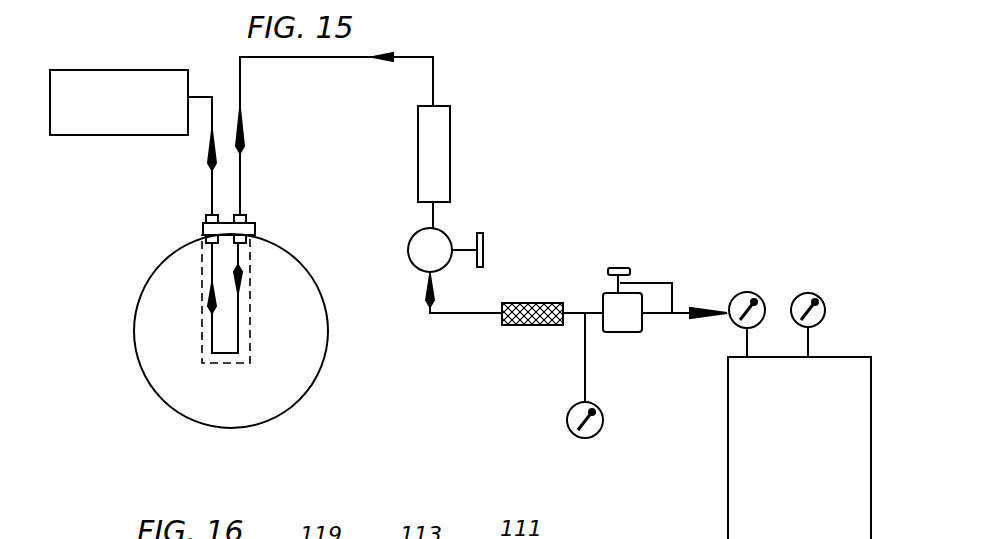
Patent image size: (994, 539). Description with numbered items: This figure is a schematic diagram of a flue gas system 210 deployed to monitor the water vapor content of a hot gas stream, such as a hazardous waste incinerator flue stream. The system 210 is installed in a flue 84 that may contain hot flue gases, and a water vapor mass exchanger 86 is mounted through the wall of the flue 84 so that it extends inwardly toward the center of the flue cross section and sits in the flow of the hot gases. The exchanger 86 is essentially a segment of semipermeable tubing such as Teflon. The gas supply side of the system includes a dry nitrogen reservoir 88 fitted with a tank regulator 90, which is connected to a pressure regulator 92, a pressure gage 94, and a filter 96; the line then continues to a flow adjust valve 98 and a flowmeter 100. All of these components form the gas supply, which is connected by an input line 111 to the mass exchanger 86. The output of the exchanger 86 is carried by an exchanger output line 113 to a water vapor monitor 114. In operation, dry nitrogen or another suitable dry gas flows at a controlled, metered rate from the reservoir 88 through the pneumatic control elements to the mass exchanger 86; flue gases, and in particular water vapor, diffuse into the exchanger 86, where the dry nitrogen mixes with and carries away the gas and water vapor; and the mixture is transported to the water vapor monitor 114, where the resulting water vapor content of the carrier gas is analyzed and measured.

The flue 84 is at (165, 403).
The water vapor mass exchanger 86 is at (250, 318).
The dry nitrogen reservoir 88 is at (740, 487).
The tank regulator 90 is at (800, 293).
The pressure regulator 92 is at (603, 295).
The pressure gage 94 is at (599, 411).
The filter 96 is at (533, 327).
The flow adjust valve 98 is at (446, 236).
The flowmeter 100 is at (450, 130).
The input line 111 is at (440, 36).
The exchanger output line 113 is at (212, 168).
The water vapor monitor 114 is at (84, 70).
The flue gas system 210 is at (630, 160).